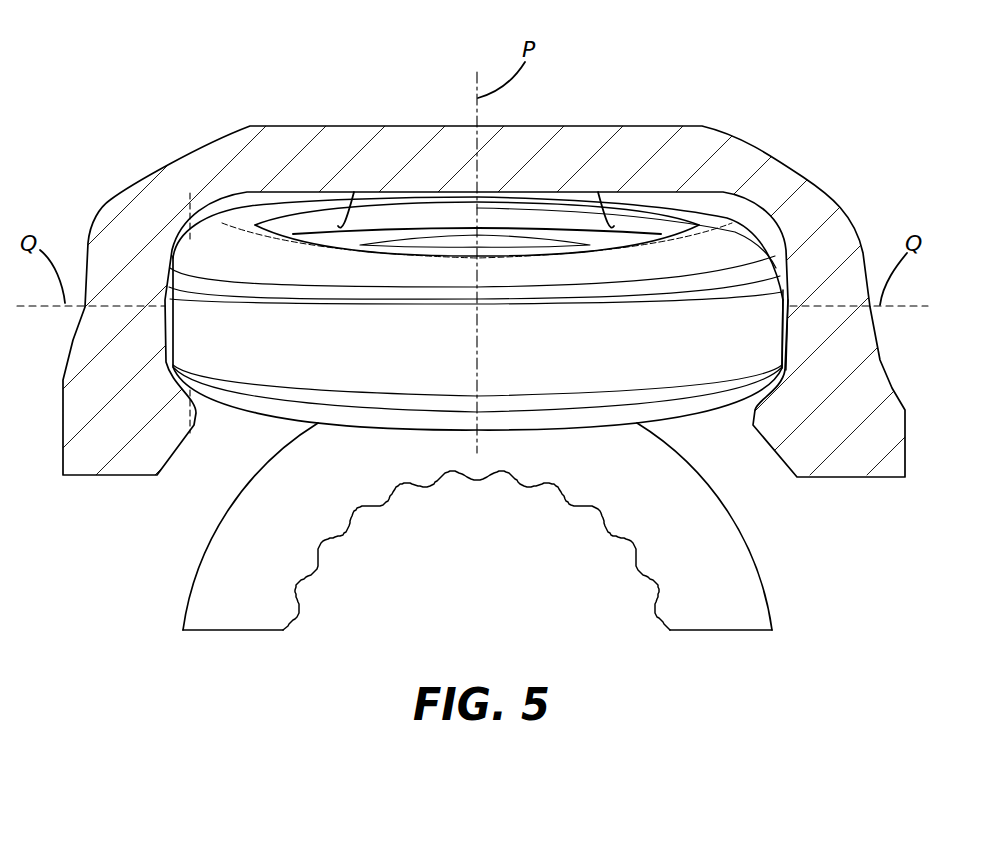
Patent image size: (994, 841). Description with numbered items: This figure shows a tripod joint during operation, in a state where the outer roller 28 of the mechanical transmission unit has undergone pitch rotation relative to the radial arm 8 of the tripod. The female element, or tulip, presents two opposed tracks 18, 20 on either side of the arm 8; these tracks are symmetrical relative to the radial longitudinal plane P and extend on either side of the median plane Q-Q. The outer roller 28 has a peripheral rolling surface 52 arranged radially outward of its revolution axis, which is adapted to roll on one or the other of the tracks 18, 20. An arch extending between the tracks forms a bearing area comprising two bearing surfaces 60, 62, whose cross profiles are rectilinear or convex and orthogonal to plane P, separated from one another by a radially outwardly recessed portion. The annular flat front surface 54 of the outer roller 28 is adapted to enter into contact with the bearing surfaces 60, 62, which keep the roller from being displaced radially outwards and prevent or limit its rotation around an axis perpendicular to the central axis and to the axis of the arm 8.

The radial arm 8 is at (465, 240).
The track 18 is at (167, 351).
The track 20 is at (786, 291).
The outer roller 28 is at (677, 365).
The peripheral rolling surface 52 is at (785, 337).
The flat front surface 54 is at (420, 202).
The bearing surface 60 is at (338, 226).
The bearing surface 62 is at (614, 226).